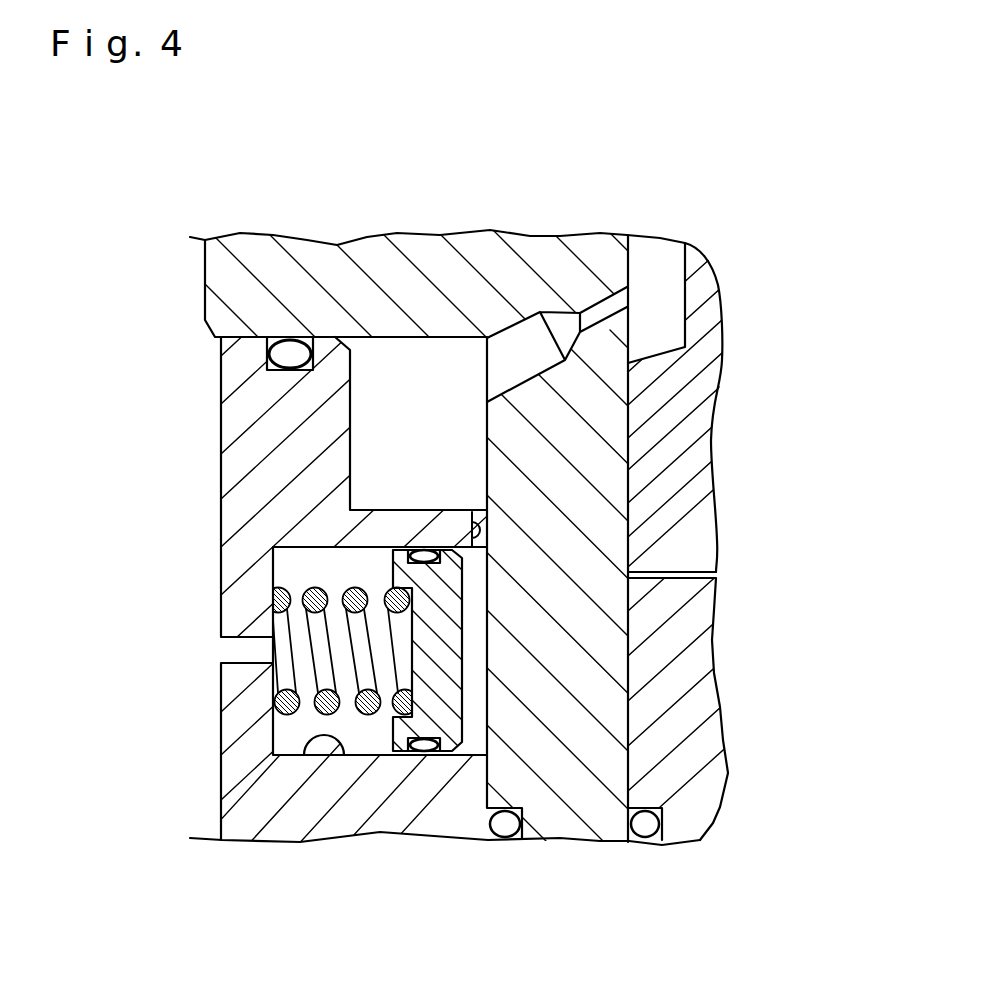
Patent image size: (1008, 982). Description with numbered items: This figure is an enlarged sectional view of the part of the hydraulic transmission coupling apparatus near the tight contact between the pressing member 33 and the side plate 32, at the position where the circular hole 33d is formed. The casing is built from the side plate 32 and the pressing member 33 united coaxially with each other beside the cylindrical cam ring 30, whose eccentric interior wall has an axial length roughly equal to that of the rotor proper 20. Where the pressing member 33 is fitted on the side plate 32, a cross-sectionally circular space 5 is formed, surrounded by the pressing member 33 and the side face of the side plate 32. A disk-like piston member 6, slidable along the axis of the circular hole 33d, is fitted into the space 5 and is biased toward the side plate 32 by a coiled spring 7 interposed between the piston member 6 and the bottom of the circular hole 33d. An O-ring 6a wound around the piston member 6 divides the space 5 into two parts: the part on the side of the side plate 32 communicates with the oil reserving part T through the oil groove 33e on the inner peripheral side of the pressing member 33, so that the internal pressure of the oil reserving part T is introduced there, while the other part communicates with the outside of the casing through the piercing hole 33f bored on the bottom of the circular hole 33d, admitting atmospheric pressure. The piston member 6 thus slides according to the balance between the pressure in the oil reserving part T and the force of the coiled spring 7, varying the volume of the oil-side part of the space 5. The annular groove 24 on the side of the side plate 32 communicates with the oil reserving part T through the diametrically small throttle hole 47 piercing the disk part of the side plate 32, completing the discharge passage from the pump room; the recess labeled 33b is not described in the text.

The oil reserving part T is at (420, 393).
The throttle hole 47 is at (522, 318).
The annular groove 24 is at (685, 333).
The rotor proper 20 is at (692, 446).
The recess of valve body 33b is at (383, 505).
The pressing member 33 is at (243, 493).
The oil groove 33e is at (467, 537).
The coiled spring 7 is at (313, 605).
The piercing hole 33f is at (238, 663).
The space 5 is at (300, 724).
The cam ring 30 is at (715, 757).
The circular hole 33d is at (310, 737).
The O-ring 6a is at (420, 750).
The piston member 6 is at (455, 698).
The side plate 32 is at (567, 820).